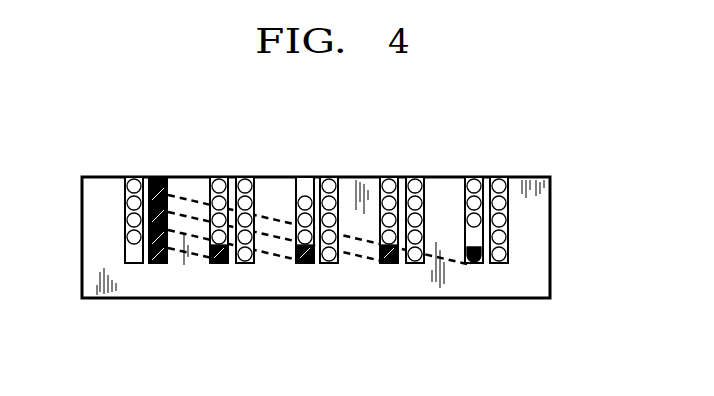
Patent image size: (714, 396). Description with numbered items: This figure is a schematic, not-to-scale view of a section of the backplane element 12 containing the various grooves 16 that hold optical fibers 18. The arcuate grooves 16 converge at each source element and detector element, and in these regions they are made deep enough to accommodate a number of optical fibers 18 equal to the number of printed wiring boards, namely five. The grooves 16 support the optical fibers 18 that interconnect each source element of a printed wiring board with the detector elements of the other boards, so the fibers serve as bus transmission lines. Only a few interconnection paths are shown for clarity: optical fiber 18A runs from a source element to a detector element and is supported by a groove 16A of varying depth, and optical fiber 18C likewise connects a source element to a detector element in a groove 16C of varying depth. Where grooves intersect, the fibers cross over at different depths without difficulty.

The backplane element 12 is at (97, 242).
The grooves 16 is at (303, 178).
The groove 16A is at (258, 213).
The groove 16C is at (274, 257).
The optical fibers 18 is at (130, 178).
The optical fiber 18A is at (162, 178).
The optical fiber 18C is at (172, 207).